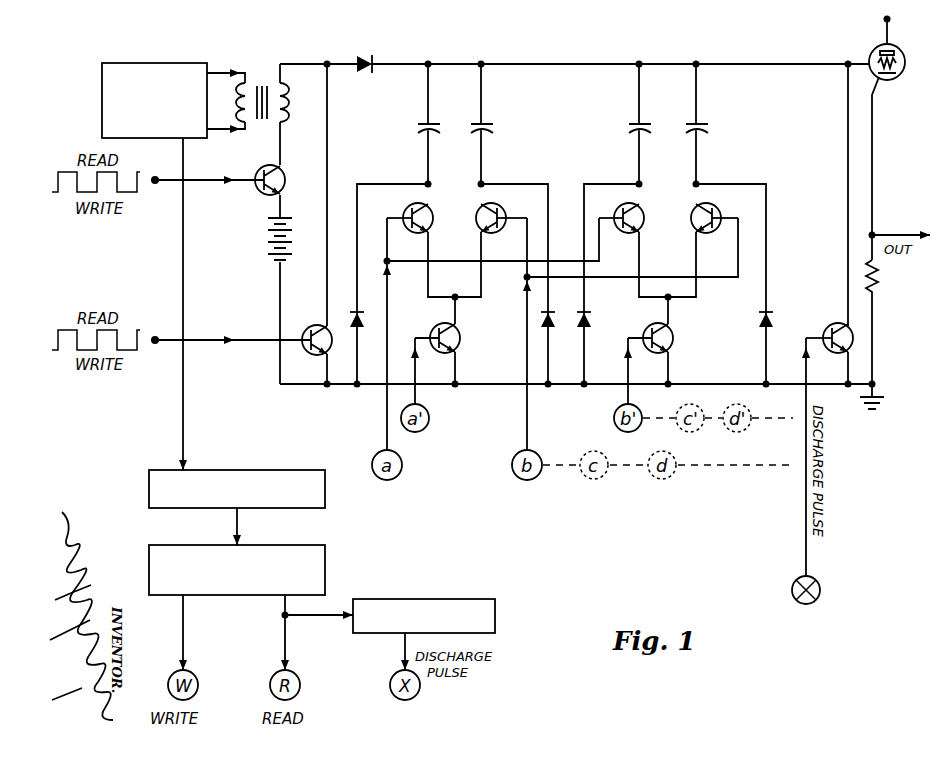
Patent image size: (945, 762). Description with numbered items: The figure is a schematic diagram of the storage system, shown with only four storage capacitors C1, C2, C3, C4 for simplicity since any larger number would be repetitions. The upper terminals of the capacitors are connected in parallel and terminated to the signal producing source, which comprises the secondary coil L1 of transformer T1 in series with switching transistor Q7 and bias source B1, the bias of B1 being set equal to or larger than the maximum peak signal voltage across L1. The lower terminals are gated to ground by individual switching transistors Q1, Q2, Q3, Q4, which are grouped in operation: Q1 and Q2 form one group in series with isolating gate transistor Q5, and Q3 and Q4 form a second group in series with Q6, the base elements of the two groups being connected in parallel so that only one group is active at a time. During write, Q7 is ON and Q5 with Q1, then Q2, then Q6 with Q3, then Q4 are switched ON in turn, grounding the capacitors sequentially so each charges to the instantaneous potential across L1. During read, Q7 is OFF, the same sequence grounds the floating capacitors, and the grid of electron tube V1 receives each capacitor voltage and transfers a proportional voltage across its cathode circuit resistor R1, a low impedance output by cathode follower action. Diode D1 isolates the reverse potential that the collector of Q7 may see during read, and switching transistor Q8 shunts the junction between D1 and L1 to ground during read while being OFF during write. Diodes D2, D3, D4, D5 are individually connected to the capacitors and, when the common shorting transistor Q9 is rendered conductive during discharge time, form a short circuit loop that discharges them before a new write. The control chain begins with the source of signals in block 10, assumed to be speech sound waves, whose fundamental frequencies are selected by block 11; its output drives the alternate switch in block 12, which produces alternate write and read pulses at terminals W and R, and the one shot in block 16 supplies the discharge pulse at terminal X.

The source of signals 10 is at (102, 107).
The fundamental frequency selector 11 is at (290, 468).
The alternate switch 12 is at (303, 546).
The one shot 16 is at (448, 599).
The transformer T1 is at (251, 112).
The secondary coil L1 is at (297, 102).
The bias source B1 is at (268, 246).
The diode D1 is at (366, 78).
The diode D2 is at (362, 318).
The diode D3 is at (553, 318).
The diode D4 is at (589, 318).
The diode D5 is at (771, 318).
The storage capacitor C1 is at (421, 125).
The storage capacitor C2 is at (493, 123).
The storage capacitor C3 is at (632, 125).
The storage capacitor C4 is at (705, 123).
The switching transistor Q1 is at (401, 204).
The switching transistor Q2 is at (498, 204).
The switching transistor Q3 is at (625, 204).
The switching transistor Q4 is at (714, 204).
The series connected switching transistor Q5 is at (466, 336).
The series connected switching transistor Q6 is at (679, 330).
The switching transistor Q7 is at (285, 188).
The switching transistor Q8 is at (302, 355).
The common shorting transistor Q9 is at (822, 321).
The electron tube V1 is at (898, 76).
The cathode circuit resistor R1 is at (880, 285).